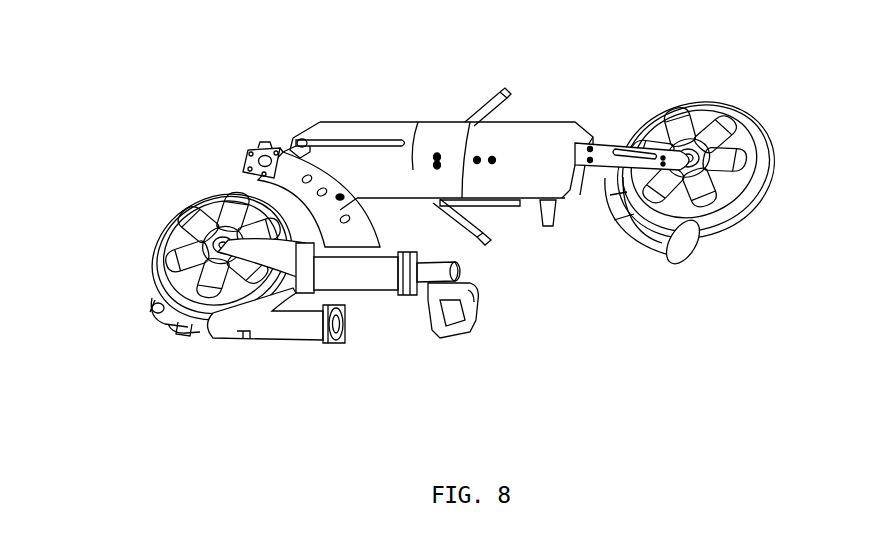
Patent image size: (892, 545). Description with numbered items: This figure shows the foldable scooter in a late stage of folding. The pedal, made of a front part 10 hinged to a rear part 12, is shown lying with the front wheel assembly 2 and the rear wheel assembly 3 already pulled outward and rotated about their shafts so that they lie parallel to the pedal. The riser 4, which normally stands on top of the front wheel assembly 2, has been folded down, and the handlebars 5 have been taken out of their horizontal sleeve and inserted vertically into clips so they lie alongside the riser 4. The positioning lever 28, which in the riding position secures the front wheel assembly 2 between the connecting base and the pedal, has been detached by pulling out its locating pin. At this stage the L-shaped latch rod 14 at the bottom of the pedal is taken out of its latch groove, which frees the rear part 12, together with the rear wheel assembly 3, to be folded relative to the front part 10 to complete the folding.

The front wheel assembly 2 is at (152, 266).
The rear wheel assembly 3 is at (677, 255).
The riser 4 is at (385, 270).
The handlebars 5 is at (288, 322).
The front part 10 is at (418, 122).
The rear part 12 is at (537, 148).
The latch rod 14 is at (490, 97).
The positioning lever 28 is at (343, 147).